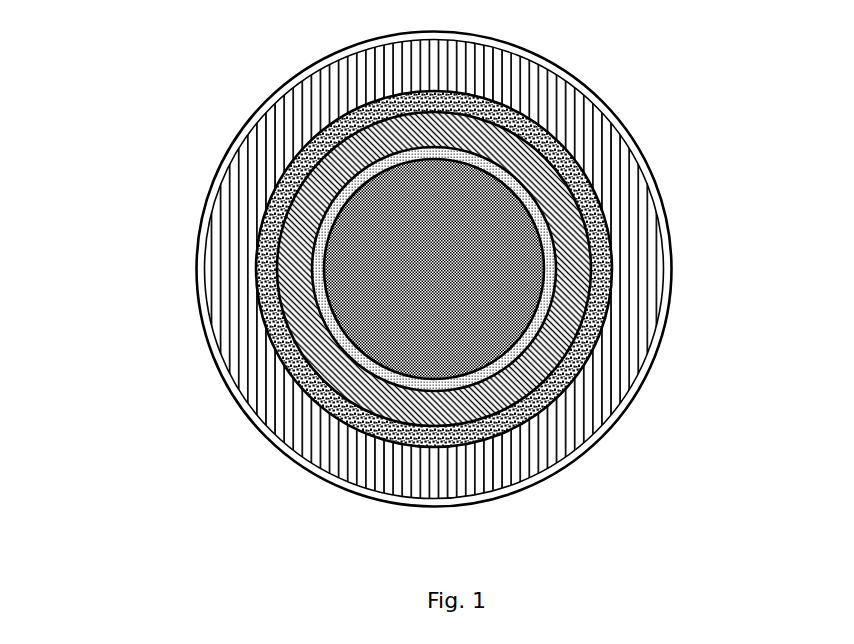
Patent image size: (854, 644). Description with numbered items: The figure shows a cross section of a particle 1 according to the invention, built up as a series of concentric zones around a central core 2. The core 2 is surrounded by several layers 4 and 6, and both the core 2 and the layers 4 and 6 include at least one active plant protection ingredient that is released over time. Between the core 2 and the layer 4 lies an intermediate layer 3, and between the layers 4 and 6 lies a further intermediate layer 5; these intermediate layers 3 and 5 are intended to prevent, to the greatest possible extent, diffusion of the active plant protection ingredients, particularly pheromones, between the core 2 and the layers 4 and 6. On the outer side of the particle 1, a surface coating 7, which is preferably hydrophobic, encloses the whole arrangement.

The particle 1 is at (170, 232).
The core 2 is at (415, 233).
The intermediate layer 3 is at (490, 387).
The layer 4 is at (565, 340).
The intermediate layer 5 is at (607, 250).
The layer 6 is at (594, 147).
The surface coating 7 is at (548, 60).